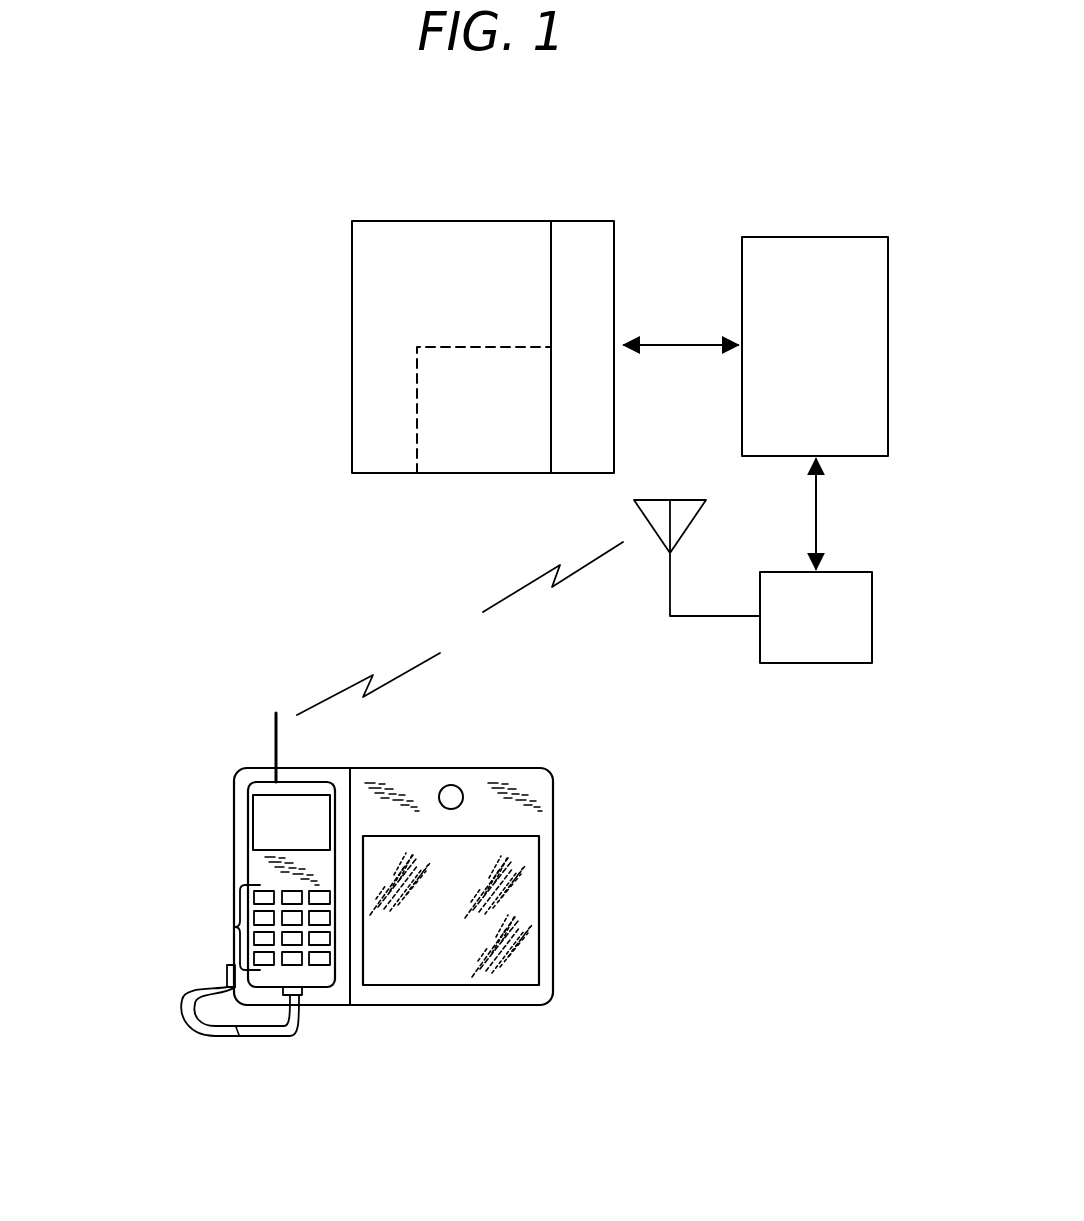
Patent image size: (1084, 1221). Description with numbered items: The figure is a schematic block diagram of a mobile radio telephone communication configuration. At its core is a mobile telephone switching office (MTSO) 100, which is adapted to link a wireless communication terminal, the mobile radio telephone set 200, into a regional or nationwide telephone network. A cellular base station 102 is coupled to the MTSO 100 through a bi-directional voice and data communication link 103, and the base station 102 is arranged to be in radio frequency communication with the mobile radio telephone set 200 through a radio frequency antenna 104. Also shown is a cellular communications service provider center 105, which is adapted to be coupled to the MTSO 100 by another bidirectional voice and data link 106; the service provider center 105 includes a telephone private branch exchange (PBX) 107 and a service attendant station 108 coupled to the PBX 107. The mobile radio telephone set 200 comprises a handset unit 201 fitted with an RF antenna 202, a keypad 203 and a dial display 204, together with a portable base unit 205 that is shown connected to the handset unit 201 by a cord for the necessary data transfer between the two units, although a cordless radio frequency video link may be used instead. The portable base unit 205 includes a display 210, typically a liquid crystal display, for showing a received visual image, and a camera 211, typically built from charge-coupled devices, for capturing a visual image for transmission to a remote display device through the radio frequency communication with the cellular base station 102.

The mobile telephone switching office (MTSO) 100 is at (889, 346).
The cellular base station 102 is at (873, 617).
The bi-directional voice and data communication link 103 is at (817, 520).
The radio frequency (RF) antenna 104 is at (688, 500).
The cellular communications service provider center 105 is at (479, 248).
The bidirectional voice and data link 106 is at (684, 342).
The telephone private branch exchange (PBX) 107 is at (579, 238).
The service attendant station 108 is at (533, 464).
The mobile radio telephone set 200 is at (186, 777).
The handset unit 201 is at (260, 885).
The RF antenna 202 is at (274, 750).
The keypad 203 is at (236, 927).
The dial display 204 is at (272, 825).
The portable base unit 205 is at (555, 809).
The display 210 is at (526, 903).
The camera 211 is at (456, 788).